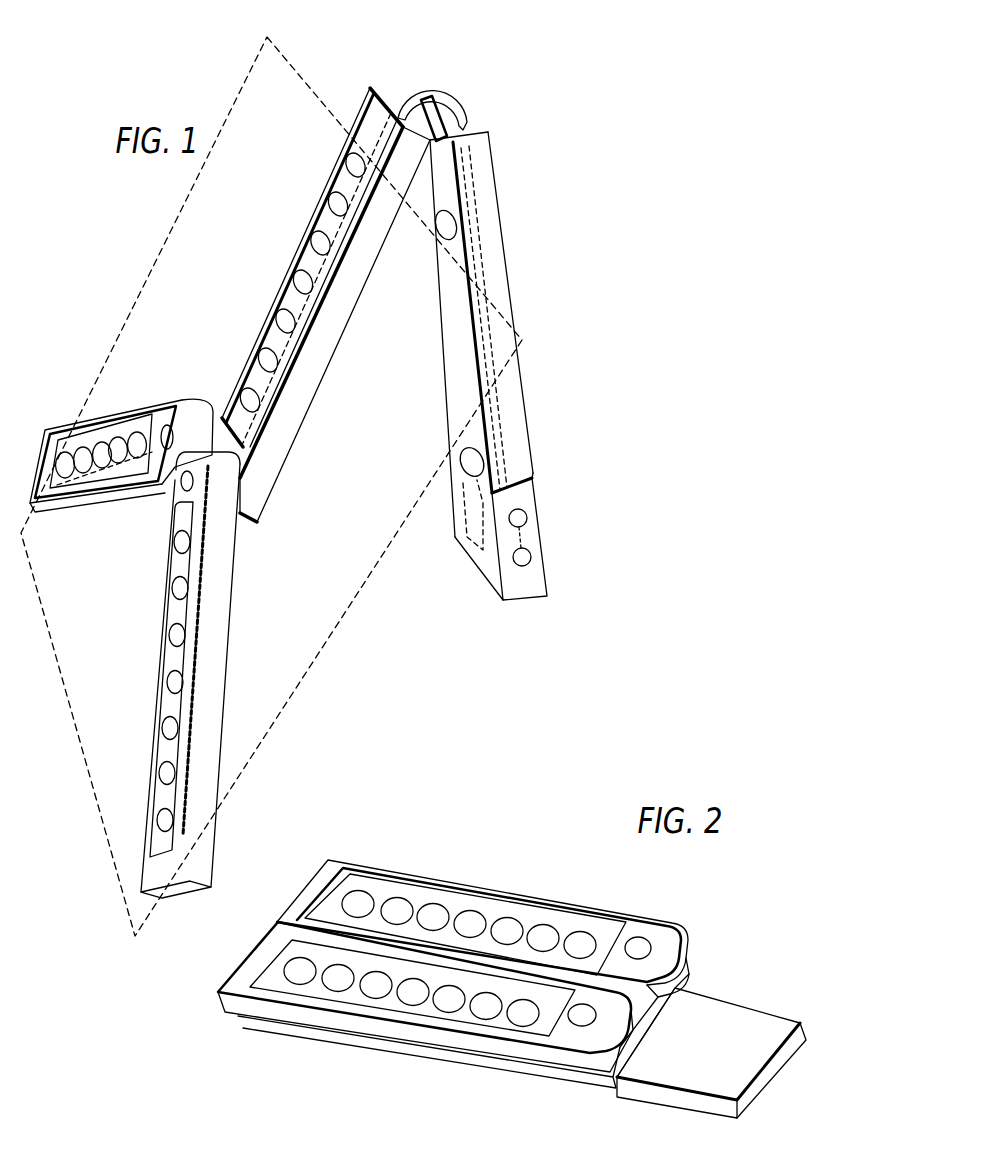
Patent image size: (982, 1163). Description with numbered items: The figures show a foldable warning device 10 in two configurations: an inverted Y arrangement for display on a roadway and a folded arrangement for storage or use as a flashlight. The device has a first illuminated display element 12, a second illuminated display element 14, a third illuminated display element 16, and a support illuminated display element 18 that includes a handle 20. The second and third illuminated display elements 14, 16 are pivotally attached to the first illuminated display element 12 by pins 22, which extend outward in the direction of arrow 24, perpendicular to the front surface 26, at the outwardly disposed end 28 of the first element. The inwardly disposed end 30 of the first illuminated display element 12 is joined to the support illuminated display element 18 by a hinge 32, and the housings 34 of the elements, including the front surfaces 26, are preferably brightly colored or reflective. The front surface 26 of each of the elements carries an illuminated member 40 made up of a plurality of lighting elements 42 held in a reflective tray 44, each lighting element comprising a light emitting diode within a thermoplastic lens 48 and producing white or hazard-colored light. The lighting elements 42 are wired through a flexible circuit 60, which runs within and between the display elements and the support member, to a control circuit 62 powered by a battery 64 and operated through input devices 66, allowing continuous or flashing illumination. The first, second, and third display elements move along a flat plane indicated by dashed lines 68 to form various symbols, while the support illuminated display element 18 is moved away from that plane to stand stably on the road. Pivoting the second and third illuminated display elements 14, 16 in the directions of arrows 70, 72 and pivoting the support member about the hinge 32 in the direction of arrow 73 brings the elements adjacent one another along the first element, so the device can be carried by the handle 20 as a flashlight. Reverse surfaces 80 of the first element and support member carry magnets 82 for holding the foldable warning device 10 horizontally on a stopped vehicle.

In FIG. 1, the foldable warning device 10 is at (196, 228).
In FIG. 2, the foldable warning device 10 is at (367, 846).
In FIG. 1, the first illuminated display element 12 is at (300, 228).
In FIG. 2, the first illuminated display element 12 is at (678, 991).
In FIG. 1, the second illuminated display element 14 is at (85, 415).
In FIG. 2, the second illuminated display element 14 is at (363, 1047).
In FIG. 1, the third illuminated display element 16 is at (151, 725).
In FIG. 2, the third illuminated display element 16 is at (517, 895).
In FIG. 1, the support illuminated display element 18 is at (522, 353).
In FIG. 2, the support illuminated display element 18 is at (480, 1065).
In FIG. 1, the handle 20 is at (545, 487).
In FIG. 2, the handle 20 is at (767, 1017).
In FIG. 1, the pins 22 is at (168, 447).
In FIG. 2, the pins 22 is at (642, 940).
In FIG. 1, the arrow 24 is at (158, 380).
In FIG. 1, the front surface 26 is at (322, 196).
In FIG. 1, the outwardly disposed end 28 is at (248, 505).
In FIG. 1, the inwardly disposed end 30 is at (391, 87).
In FIG. 1, the hinge 32 is at (430, 98).
In FIG. 1, the housings 34 is at (215, 745).
In FIG. 1, the illuminated member 40 is at (245, 355).
In FIG. 2, the illuminated member 40 is at (436, 906).
In FIG. 1, the lighting elements 42 is at (297, 287).
In FIG. 1, the reflective tray 44 is at (367, 145).
In FIG. 1, the thermoplastic lens 48 is at (345, 282).
In FIG. 1, the flexible circuit 60 is at (456, 90).
In FIG. 1, the control circuit 62 is at (530, 438).
In FIG. 1, the battery 64 is at (456, 536).
In FIG. 1, the input devices 66 is at (530, 553).
In FIG. 1, the dashed lines 68 is at (328, 642).
In FIG. 1, the arrow 70 is at (82, 416).
In FIG. 2, the arrow 70 is at (283, 1010).
In FIG. 1, the arrow 72 is at (200, 622).
In FIG. 2, the arrow 72 is at (373, 862).
In FIG. 1, the arrow 73 is at (388, 276).
In FIG. 1, the reverse surfaces 80 is at (457, 383).
In FIG. 1, the magnets 82 is at (459, 458).